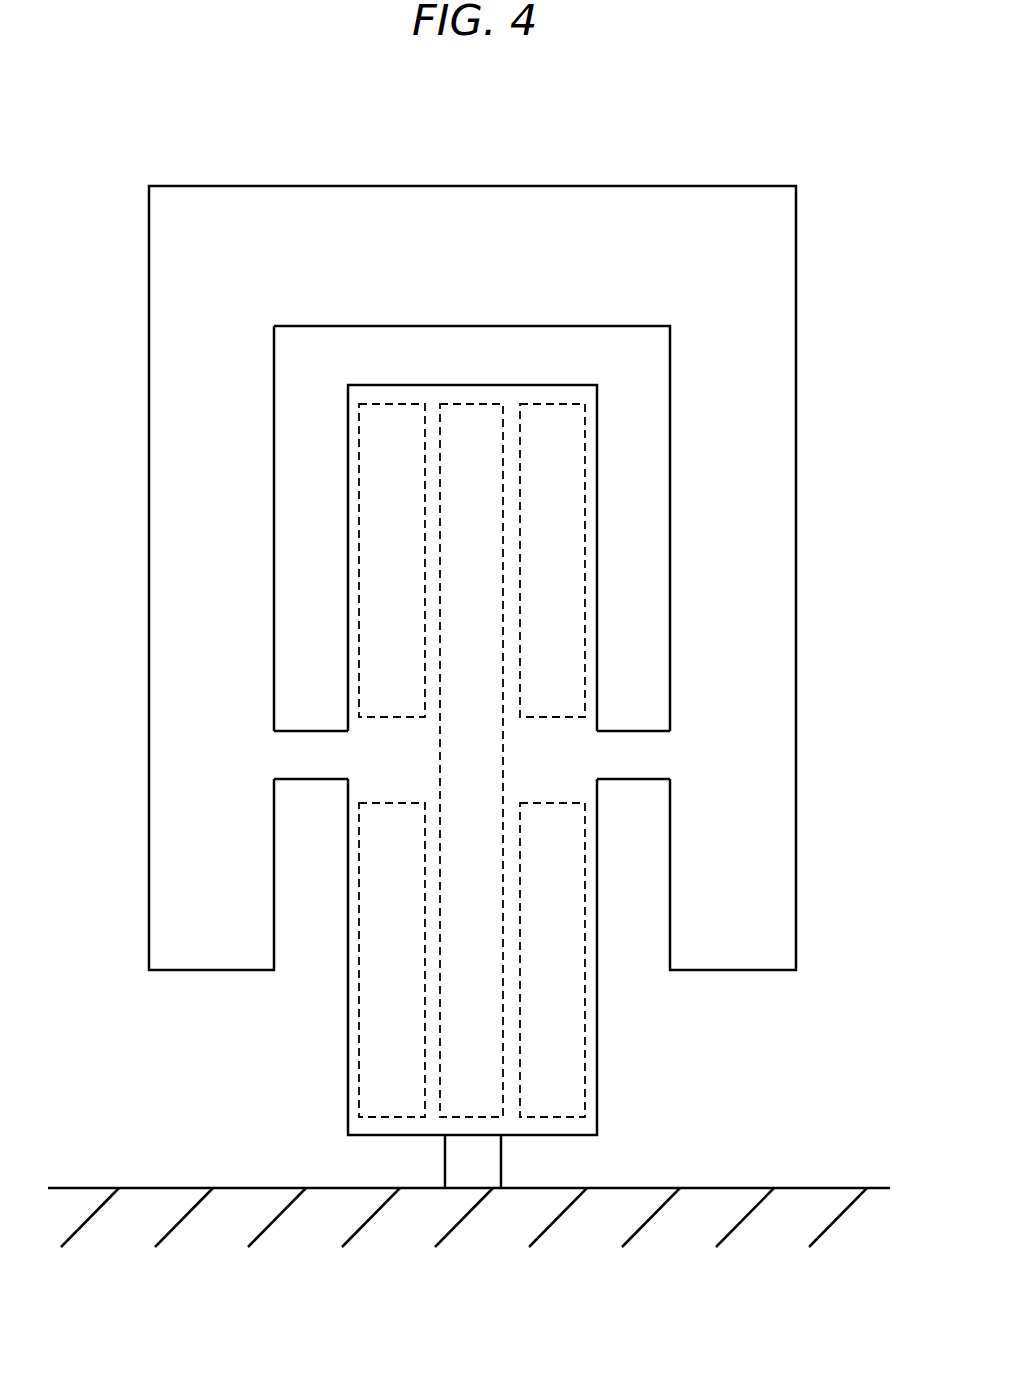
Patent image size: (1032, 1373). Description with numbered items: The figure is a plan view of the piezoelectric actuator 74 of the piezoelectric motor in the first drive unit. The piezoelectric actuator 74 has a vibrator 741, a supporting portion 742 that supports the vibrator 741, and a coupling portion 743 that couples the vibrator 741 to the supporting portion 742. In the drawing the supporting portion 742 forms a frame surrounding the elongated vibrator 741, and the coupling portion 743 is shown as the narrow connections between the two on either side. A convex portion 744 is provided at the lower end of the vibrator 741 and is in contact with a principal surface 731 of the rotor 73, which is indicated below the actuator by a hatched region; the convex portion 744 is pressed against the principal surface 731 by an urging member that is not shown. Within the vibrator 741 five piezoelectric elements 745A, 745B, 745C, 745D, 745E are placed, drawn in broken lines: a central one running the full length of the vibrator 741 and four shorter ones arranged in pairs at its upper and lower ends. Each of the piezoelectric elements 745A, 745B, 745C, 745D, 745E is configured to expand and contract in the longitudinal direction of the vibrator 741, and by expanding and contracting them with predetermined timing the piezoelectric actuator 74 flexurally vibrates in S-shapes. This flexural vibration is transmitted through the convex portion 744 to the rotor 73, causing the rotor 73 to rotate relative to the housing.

The piezoelectric actuator 74 is at (693, 186).
The vibrator 741 is at (372, 1086).
The supporting portion 742 is at (775, 519).
The coupling portion 743 is at (302, 759).
The convex portion 744 is at (480, 1172).
The piezoelectric element 745A is at (482, 862).
The piezoelectric element 745B is at (562, 1060).
The piezoelectric element 745C is at (553, 433).
The piezoelectric element 745D is at (372, 1010).
The piezoelectric element 745E is at (382, 493).
The rotor 73 is at (795, 1222).
The principal surface 731 is at (658, 1188).